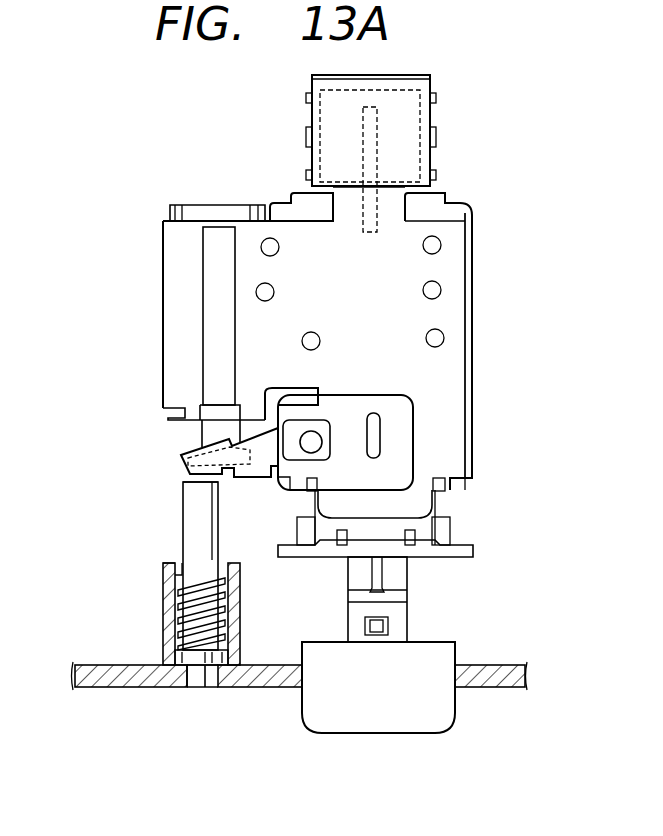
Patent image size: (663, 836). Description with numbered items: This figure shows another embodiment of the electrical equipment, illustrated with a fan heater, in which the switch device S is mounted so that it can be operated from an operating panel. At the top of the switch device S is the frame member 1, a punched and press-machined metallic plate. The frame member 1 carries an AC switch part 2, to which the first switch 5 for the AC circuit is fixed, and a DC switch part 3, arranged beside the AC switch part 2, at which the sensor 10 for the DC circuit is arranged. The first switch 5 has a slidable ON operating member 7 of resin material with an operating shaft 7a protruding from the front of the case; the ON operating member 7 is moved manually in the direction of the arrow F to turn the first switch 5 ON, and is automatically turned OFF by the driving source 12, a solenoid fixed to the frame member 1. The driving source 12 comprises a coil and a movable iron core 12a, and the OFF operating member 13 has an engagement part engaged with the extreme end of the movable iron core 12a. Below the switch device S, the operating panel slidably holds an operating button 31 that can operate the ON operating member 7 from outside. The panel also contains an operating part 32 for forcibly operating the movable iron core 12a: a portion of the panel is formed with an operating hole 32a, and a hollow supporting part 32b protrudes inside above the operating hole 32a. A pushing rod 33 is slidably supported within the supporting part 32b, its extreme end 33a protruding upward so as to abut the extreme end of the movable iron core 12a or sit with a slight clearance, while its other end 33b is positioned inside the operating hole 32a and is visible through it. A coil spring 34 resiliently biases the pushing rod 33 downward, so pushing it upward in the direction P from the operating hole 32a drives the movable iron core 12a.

The frame member 1 is at (438, 423).
The AC switch part 2 is at (388, 297).
The DC switch part 3 is at (392, 110).
The first switch 5 is at (420, 373).
The ON operating member 7 is at (412, 574).
The operating shaft 7a is at (408, 612).
The sensor 10 is at (402, 166).
The driving source 12 is at (170, 359).
The movable iron core 12a is at (210, 433).
The OFF operating member 13 is at (172, 467).
The operating button 31 is at (423, 707).
The operating part 32 is at (152, 643).
The operating hole 32a is at (207, 680).
The supporting part 32b is at (163, 601).
The pushing rod 33 is at (192, 532).
The extreme end of the pushing rod 33a is at (200, 482).
The push rod lower end 33b is at (188, 688).
The coil spring 34 is at (185, 553).
The switch device S is at (475, 338).
The pressing force P is at (205, 711).
The direction of arrow F is at (380, 748).